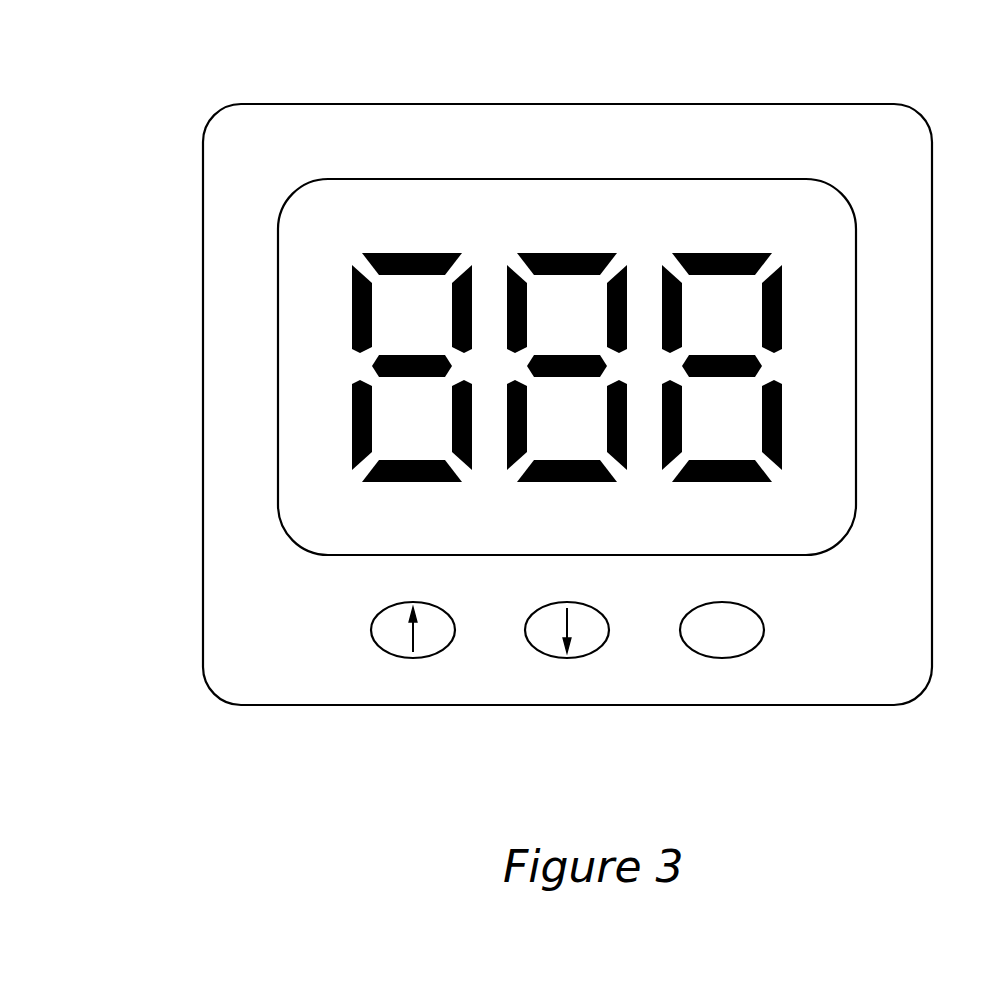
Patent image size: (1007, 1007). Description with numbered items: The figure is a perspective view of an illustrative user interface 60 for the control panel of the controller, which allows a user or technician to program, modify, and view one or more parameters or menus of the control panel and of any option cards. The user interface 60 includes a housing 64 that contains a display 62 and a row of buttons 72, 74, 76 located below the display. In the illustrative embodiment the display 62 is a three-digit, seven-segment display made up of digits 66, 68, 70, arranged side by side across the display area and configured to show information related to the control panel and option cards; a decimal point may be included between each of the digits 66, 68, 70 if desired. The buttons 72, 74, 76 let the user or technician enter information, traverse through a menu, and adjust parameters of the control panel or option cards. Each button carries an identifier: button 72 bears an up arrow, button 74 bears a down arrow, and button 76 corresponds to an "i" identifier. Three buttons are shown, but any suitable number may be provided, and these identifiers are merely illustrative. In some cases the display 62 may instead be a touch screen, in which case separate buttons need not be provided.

The user interface 60 is at (230, 80).
The display 62 is at (833, 185).
The housing 64 is at (912, 108).
The digit 66 is at (410, 245).
The digit 68 is at (565, 245).
The digit 70 is at (720, 245).
The button 72 is at (413, 658).
The button 74 is at (567, 658).
The button 76 is at (722, 658).